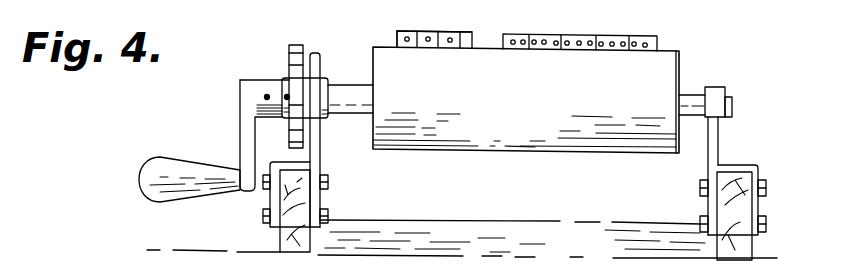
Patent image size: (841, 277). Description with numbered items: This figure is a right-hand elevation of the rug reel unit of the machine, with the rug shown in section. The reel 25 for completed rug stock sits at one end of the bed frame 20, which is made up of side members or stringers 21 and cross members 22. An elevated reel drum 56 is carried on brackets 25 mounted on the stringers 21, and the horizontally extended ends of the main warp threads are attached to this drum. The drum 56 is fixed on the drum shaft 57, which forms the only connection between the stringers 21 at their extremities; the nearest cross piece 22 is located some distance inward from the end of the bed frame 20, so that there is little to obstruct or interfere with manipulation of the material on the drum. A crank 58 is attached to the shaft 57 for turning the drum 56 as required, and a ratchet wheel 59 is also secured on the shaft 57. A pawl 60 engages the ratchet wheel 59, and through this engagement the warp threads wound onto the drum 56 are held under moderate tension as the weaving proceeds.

The bed frame 20 is at (409, 231).
The stringers 21 is at (300, 198).
The cross members 22 is at (626, 232).
The reel 25 is at (230, 57).
The reel drum 56 is at (644, 107).
The drum shaft 57 is at (345, 92).
The crank 58 is at (245, 127).
The ratchet wheel 59 is at (295, 73).
The pawl 60 is at (291, 52).